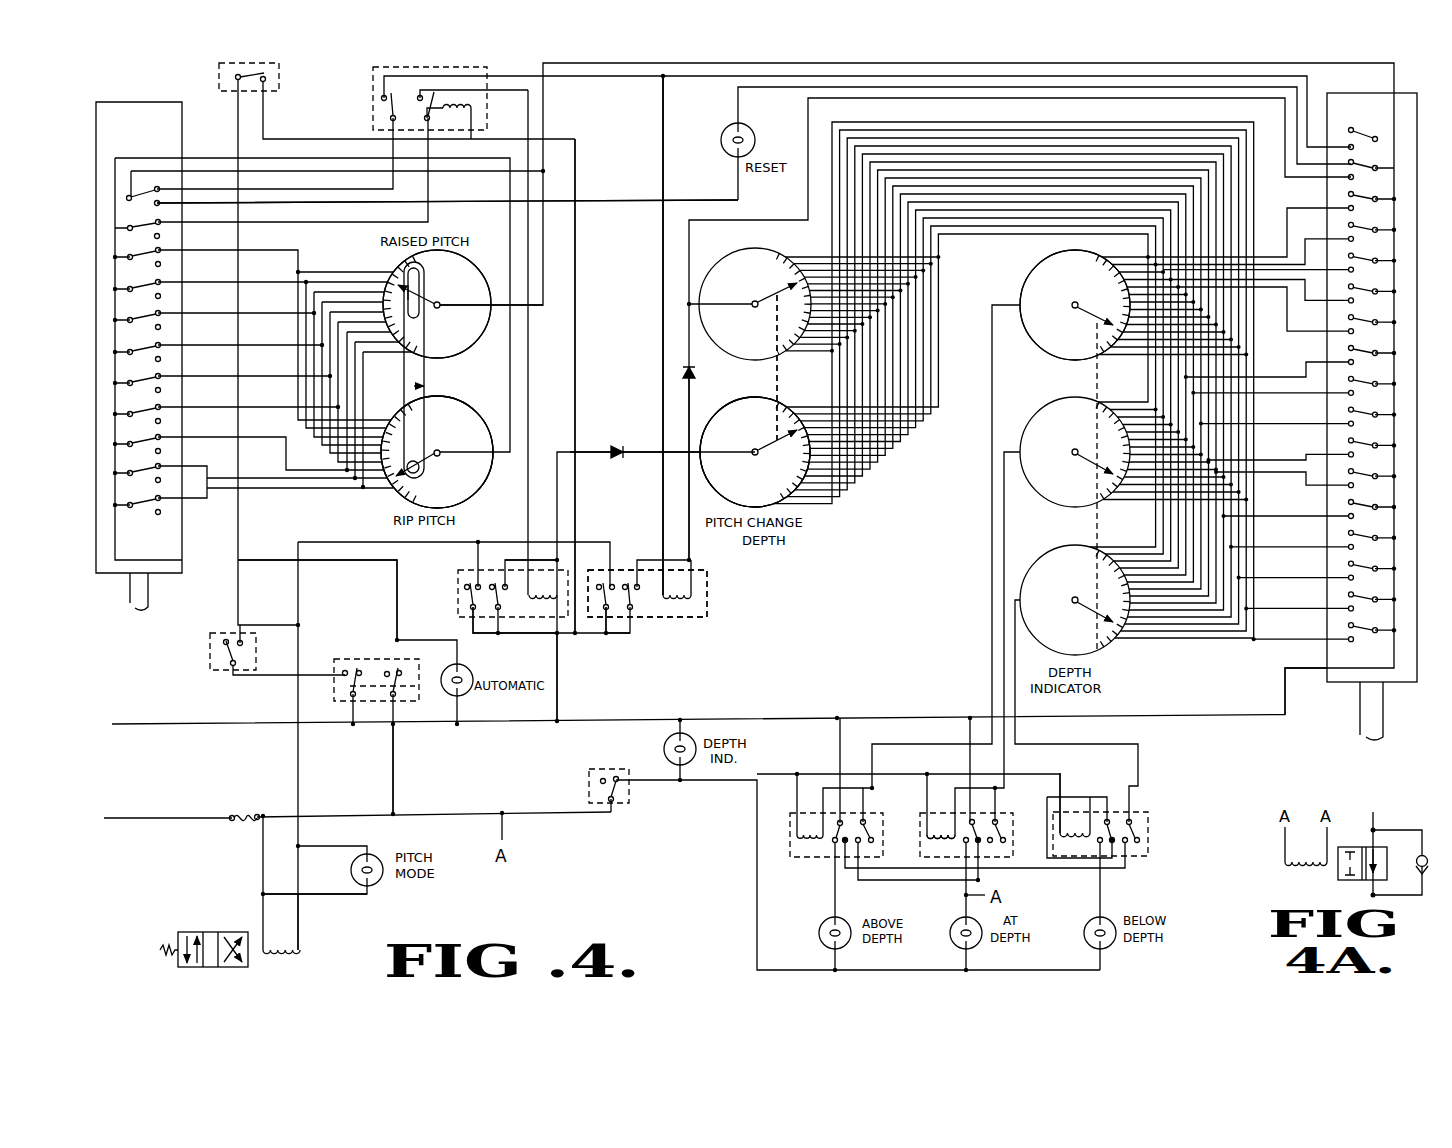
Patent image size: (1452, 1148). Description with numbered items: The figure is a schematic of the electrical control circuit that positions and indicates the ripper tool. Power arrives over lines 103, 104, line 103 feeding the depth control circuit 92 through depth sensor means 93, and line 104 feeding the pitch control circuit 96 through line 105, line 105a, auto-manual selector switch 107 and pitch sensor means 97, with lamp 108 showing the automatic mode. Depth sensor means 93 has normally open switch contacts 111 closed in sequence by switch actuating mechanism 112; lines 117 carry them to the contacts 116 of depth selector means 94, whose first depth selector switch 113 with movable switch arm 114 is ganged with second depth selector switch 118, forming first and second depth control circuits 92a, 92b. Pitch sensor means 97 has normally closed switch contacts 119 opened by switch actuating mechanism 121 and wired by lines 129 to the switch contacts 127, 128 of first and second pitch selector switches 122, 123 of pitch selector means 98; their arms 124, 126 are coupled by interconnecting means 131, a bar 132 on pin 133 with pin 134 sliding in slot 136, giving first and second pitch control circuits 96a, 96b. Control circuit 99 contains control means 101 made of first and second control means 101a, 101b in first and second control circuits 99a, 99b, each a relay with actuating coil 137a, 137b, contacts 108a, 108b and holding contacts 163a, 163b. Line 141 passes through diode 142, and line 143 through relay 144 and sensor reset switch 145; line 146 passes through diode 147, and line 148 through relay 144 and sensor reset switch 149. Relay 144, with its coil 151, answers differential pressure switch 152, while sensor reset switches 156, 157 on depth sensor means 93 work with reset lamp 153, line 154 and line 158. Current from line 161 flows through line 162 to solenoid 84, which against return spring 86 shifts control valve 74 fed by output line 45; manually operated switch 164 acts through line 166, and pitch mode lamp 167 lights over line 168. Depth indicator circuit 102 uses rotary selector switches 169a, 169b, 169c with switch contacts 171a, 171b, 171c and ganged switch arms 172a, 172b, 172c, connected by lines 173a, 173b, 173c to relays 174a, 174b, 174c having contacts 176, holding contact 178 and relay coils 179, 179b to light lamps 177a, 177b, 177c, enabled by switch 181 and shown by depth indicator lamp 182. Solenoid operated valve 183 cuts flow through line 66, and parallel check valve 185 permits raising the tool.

In FIG. 4, the output line 45 is at (302, 918).
In FIG. 4A, the line 66 is at (1375, 826).
In FIG. 4, the electrically operated control valve 74 is at (232, 930).
In FIG. 4, the solenoid 84 is at (302, 950).
In FIG. 4, the return spring 86 is at (160, 948).
In FIG. 4, the depth control circuit 92 is at (655, 312).
In FIG. 4, the first depth control circuit 92a is at (661, 464).
In FIG. 4, the second depth control circuit 92b is at (656, 291).
In FIG. 4, the depth sensor means 93 is at (1340, 690).
In FIG. 4, the depth selector means 94 is at (780, 553).
In FIG. 4, the pitch control circuit 96 is at (582, 362).
In FIG. 4, the first pitch control circuit 96a is at (482, 498).
In FIG. 4, the second pitch control circuit 96b is at (450, 232).
In FIG. 4, the pitch sensor means 97 is at (120, 578).
In FIG. 4, the pitch selector means 98 is at (380, 500).
In FIG. 4, the control circuit 99 is at (622, 520).
In FIG. 4, the first control circuit 99a is at (530, 640).
In FIG. 4, the second control circuit 99b is at (670, 640).
In FIG. 4, the control means 101 is at (718, 580).
In FIG. 4, the first control means 101a is at (458, 604).
In FIG. 4, the second control means 101b is at (688, 618).
In FIG. 4, the depth indicator circuit 102 is at (992, 282).
In FIG. 4, the line 103 is at (146, 720).
In FIG. 4, the line 104 is at (146, 816).
In FIG. 4, the line 105 is at (392, 770).
In FIG. 4, the line 105a is at (396, 594).
In FIG. 4, the auto-manual selector switch 107 is at (370, 656).
In FIG. 4, the lamp 108 is at (458, 696).
In FIG. 4, the relay contact 108a is at (468, 582).
In FIG. 4, the relay contact 108b is at (600, 582).
In FIG. 4, the switch contacts 111 is at (1352, 640).
In FIG. 4, the switch actuating mechanism 112 is at (1384, 720).
In FIG. 4, the first depth selector switch 113 is at (722, 500).
In FIG. 4, the movable switch arm 114 is at (766, 442).
In FIG. 4, the contacts 116 is at (806, 468).
In FIG. 4, the lines 117 is at (1285, 222).
In FIG. 4, the second depth selector switch 118 is at (736, 252).
In FIG. 4, the switch contacts 119 is at (143, 508).
In FIG. 4, the switch actuating mechanism 121 is at (150, 598).
In FIG. 4, the first pitch selector switch 122 is at (492, 468).
In FIG. 4, the second pitch selector switch 123 is at (447, 352).
In FIG. 4, the first selector switch arm 124 is at (439, 457).
In FIG. 4, the second selector switch arm 126 is at (439, 308).
In FIG. 4, the switch contacts 127 is at (402, 418).
In FIG. 4, the switch contacts 128 is at (396, 275).
In FIG. 4, the lines 129 is at (300, 270).
In FIG. 4, the interconnecting means 131 is at (436, 385).
In FIG. 4, the bar 132 is at (425, 398).
In FIG. 4, the pin 133 is at (416, 460).
In FIG. 4, the pin 134 is at (420, 288).
In FIG. 4, the slot 136 is at (420, 272).
In FIG. 4, the actuating coil 137a is at (538, 600).
In FIG. 4, the actuating coil 137b is at (692, 598).
In FIG. 4, the line 141 is at (642, 446).
In FIG. 4, the diode 142 is at (615, 450).
In FIG. 4, the line 143 is at (529, 358).
In FIG. 4, the relay 144 is at (373, 108).
In FIG. 4, the sensor reset switch 145 is at (133, 233).
In FIG. 4, the line 146 is at (692, 384).
In FIG. 4, the diode 147 is at (697, 370).
In FIG. 4, the line 148 is at (660, 390).
In FIG. 4, the sensor reset switch 149 is at (149, 198).
In FIG. 4, the relay coil 151 is at (475, 109).
In FIG. 4, the differential pressure switch 152 is at (270, 76).
In FIG. 4, the reset lamp 153 is at (724, 132).
In FIG. 4, the line 154 is at (641, 196).
In FIG. 4, the sensor reset switch 156 is at (1360, 174).
In FIG. 4, the switch 157 is at (1362, 128).
In FIG. 4, the line 158 is at (806, 190).
In FIG. 4, the line 161 is at (560, 702).
In FIG. 4, the line 162 is at (314, 540).
In FIG. 4, the contact 163a is at (492, 582).
In FIG. 4, the contact 163b is at (628, 582).
In FIG. 4, the manually operated switch 164 is at (210, 654).
In FIG. 4, the line 166 is at (246, 676).
In FIG. 4, the pitch mode indicating lamp 167 is at (371, 856).
In FIG. 4, the line 168 is at (352, 896).
In FIG. 4, the rotary selector switch 169a is at (1056, 252).
In FIG. 4, the rotary selector switch 169b is at (1056, 397).
In FIG. 4, the rotary selector switch 169c is at (1064, 552).
In FIG. 4, the switch contacts 171a is at (1100, 260).
In FIG. 4, the switch contacts 171b is at (1102, 424).
In FIG. 4, the switch contacts 171c is at (1100, 566).
In FIG. 4, the switch arm 172a is at (1090, 308).
In FIG. 4, the switch arm 172b is at (1094, 480).
In FIG. 4, the switch arm 172c is at (1094, 632).
In FIG. 4, the line 173a is at (992, 432).
In FIG. 4, the line 173b is at (1004, 514).
In FIG. 4, the line 173c is at (1016, 656).
In FIG. 4, the relay 174a is at (790, 816).
In FIG. 4, the relay 174b is at (998, 812).
In FIG. 4, the relay 174c is at (1148, 816).
In FIG. 4, the contacts 176 is at (836, 846).
In FIG. 4, the lamp 177a is at (820, 942).
In FIG. 4, the lamp 177b is at (952, 944).
In FIG. 4, the lamp 177c is at (1088, 944).
In FIG. 4, the contact 178 is at (866, 820).
In FIG. 4, the relay coil 179 is at (806, 840).
In FIG. 4, the relay coil 179b is at (930, 840).
In FIG. 4, the switch 181 is at (587, 786).
In FIG. 4, the depth indicator lamp 182 is at (664, 750).
In FIG. 4A, the solenoid operated valve 183 is at (1346, 846).
In FIG. 4A, the check valve 185 is at (1432, 866).